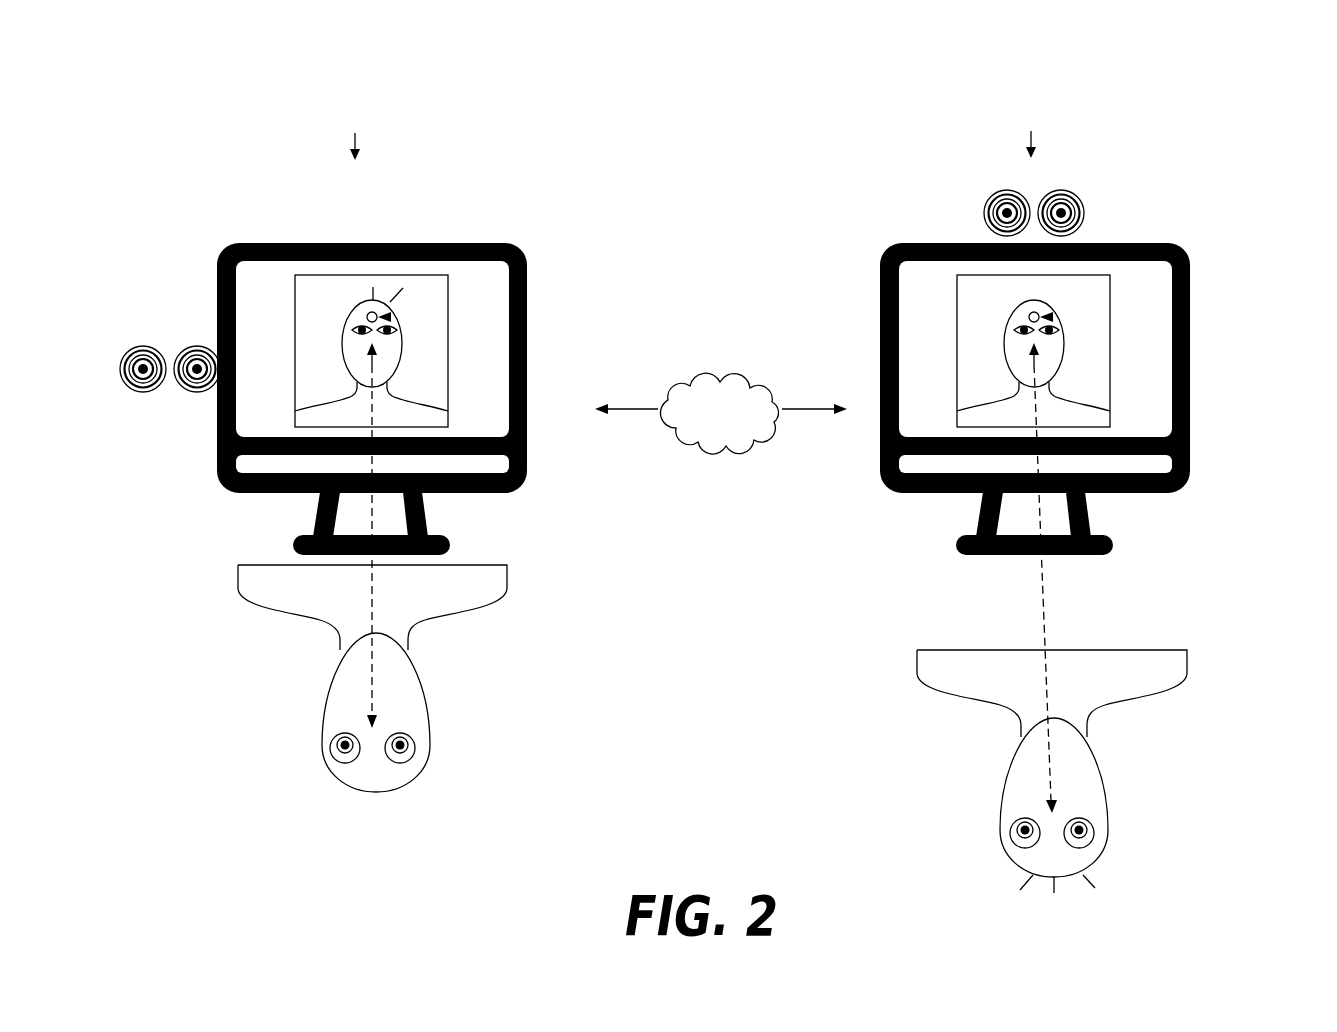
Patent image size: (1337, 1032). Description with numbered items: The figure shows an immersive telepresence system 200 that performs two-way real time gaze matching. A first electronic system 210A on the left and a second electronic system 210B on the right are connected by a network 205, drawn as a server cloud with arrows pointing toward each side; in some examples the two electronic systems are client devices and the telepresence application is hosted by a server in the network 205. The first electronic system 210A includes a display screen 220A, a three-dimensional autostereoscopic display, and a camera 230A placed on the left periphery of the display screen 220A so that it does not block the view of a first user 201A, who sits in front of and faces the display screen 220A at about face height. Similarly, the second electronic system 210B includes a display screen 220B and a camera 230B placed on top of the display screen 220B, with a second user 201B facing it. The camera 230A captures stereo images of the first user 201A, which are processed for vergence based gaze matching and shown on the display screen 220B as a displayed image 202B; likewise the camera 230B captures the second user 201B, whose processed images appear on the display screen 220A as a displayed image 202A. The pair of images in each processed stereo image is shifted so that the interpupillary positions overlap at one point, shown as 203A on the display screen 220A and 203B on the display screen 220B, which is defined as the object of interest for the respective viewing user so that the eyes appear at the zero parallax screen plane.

The immersive telepresence system 200 is at (737, 62).
The first user 201A is at (372, 578).
The second user 201B is at (1052, 629).
The displayed image of the second user 202A is at (371, 351).
The displayed image of the first user 202B is at (1033, 351).
The position of the overlapped interpupillary positions on the first display screen 203A is at (391, 317).
The point of the overlapped interpupillary positions on the second display screen 203B is at (1053, 317).
The network 205 is at (747, 381).
The first electronic system 210A is at (352, 133).
The second electronic system 210B is at (1029, 131).
The display screen 220A is at (521, 255).
The display screen 220B is at (1184, 250).
The camera 230A is at (170, 349).
The camera 230B is at (1000, 213).